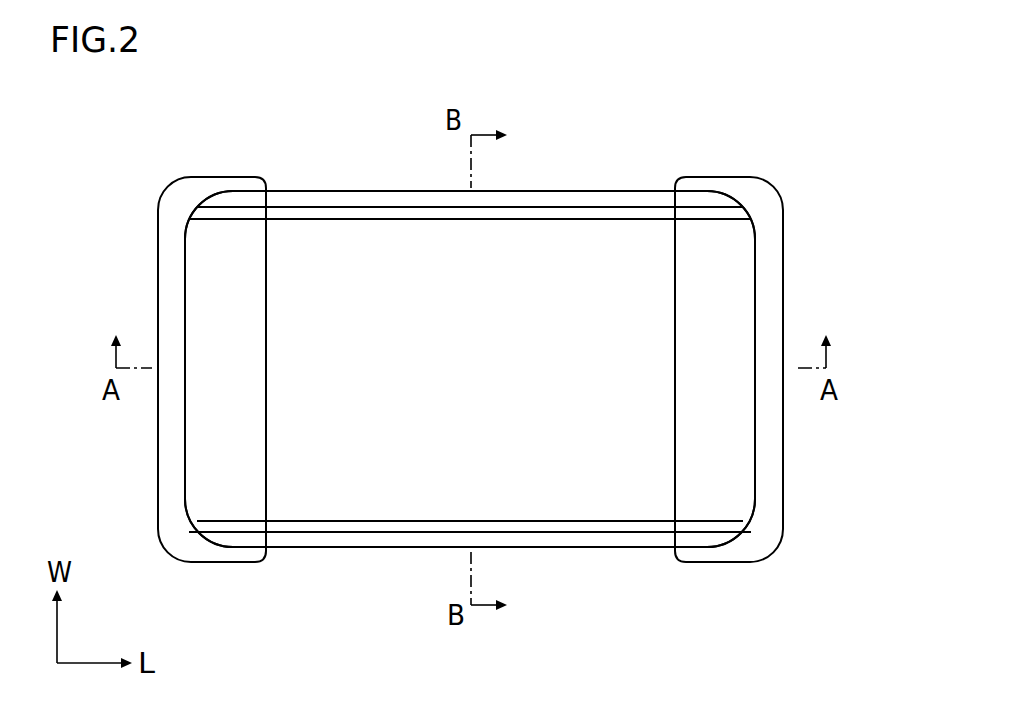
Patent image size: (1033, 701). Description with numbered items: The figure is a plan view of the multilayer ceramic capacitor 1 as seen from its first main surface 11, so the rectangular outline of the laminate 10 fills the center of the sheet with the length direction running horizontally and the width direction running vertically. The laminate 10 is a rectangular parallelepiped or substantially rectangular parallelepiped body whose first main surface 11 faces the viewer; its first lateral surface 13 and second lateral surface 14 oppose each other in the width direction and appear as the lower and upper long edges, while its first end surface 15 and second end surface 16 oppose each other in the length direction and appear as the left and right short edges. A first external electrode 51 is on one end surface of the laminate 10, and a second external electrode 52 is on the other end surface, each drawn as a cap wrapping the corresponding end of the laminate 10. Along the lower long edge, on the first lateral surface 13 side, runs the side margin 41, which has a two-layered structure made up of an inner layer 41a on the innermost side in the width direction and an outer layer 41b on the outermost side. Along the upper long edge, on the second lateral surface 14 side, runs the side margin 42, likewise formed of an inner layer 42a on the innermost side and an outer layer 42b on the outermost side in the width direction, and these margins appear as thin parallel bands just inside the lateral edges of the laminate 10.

The multilayer ceramic capacitor 1 is at (128, 128).
The laminate 10 is at (650, 180).
The first main surface 11 is at (425, 280).
The first lateral surface 13 is at (590, 548).
The second lateral surface 14 is at (327, 190).
The first end surface 15 is at (187, 448).
The second end surface 16 is at (756, 437).
The side margin 41 is at (410, 629).
The inner layer 41a is at (307, 528).
The outer layer 41b is at (368, 540).
The side margin 42 is at (630, 113).
The inner layer 42a is at (527, 210).
The outer layer 42b is at (592, 198).
The first external electrode 51 is at (162, 280).
The second external electrode 52 is at (777, 280).